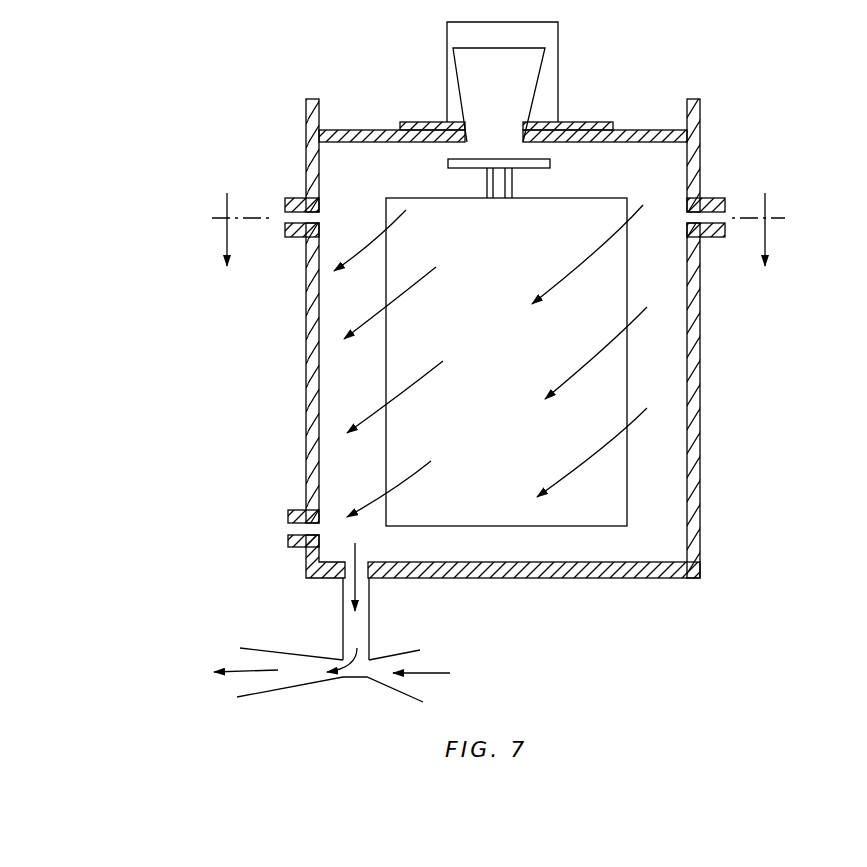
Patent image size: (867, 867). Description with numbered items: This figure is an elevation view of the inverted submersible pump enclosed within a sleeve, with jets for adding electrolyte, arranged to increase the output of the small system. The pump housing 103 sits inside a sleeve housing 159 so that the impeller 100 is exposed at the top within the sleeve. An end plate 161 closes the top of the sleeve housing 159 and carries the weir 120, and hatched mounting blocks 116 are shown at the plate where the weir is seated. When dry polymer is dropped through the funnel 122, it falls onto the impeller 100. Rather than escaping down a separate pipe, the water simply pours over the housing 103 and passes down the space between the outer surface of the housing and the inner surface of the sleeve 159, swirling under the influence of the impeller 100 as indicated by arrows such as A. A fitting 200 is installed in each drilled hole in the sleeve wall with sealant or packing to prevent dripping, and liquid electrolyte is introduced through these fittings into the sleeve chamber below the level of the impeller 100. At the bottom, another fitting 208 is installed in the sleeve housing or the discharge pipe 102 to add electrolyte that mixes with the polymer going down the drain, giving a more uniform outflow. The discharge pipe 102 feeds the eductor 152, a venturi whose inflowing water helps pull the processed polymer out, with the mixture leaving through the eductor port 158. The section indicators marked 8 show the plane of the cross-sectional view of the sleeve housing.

The impeller 100 is at (548, 161).
The discharge pipe 102 is at (369, 618).
The pump housing 103 is at (630, 372).
The mounting blocks 116 is at (428, 122).
The weir 120 is at (566, 51).
The funnel 122 is at (537, 87).
The eductor 152 is at (296, 690).
The eductor port 158 is at (242, 682).
The sleeve housing 159 is at (700, 150).
The end plate 161 is at (350, 130).
The fitting 200 is at (298, 198).
The fitting 208 is at (300, 510).
The section line 8 is at (498, 244).
The arrows A is at (372, 335).